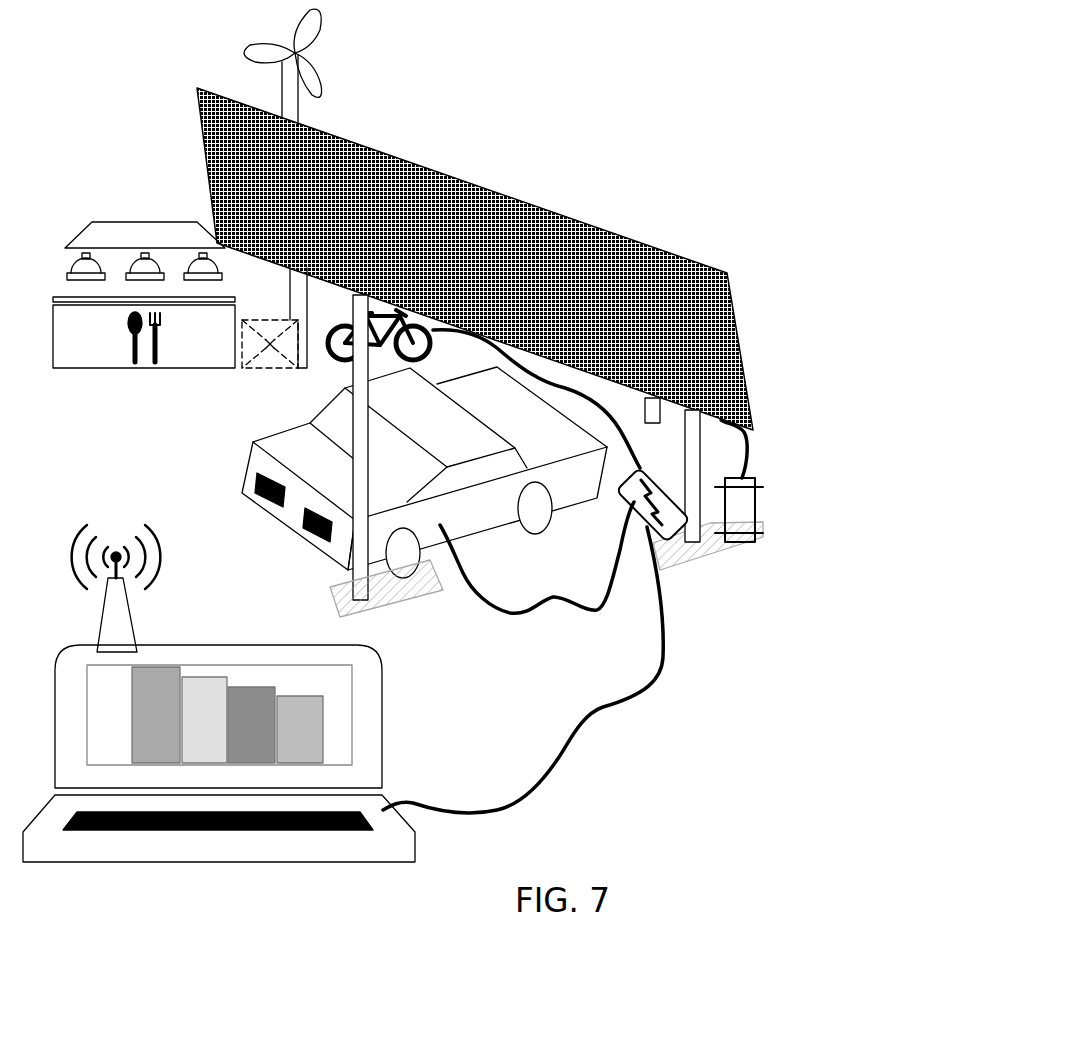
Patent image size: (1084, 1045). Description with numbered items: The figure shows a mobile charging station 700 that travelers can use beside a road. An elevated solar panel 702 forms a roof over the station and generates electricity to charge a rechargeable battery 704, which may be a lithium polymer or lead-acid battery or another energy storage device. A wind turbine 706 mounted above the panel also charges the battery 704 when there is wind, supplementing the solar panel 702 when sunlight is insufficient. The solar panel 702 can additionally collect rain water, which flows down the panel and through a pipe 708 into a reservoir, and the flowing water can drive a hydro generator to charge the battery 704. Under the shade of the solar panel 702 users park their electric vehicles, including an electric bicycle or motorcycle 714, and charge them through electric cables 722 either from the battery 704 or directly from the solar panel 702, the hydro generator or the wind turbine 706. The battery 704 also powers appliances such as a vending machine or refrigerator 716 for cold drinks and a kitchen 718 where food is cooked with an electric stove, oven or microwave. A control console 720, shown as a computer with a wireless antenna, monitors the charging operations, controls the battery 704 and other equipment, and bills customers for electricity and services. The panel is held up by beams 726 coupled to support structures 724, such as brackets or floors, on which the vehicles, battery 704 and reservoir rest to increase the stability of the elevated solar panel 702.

The charging station 700 is at (690, 103).
The solar panel 702 is at (440, 210).
The rechargeable battery 704 is at (680, 530).
The wind turbine 706 is at (298, 62).
The pipe 708 is at (747, 450).
The electric bicycle or motorcycle 714 is at (323, 368).
The vending machine and/or refrigerator 716 is at (272, 368).
The kitchen 718 is at (144, 295).
The control console 720 is at (219, 693).
The electric cables 722 is at (603, 705).
The support structures 724 is at (387, 607).
The beams 726 is at (365, 542).